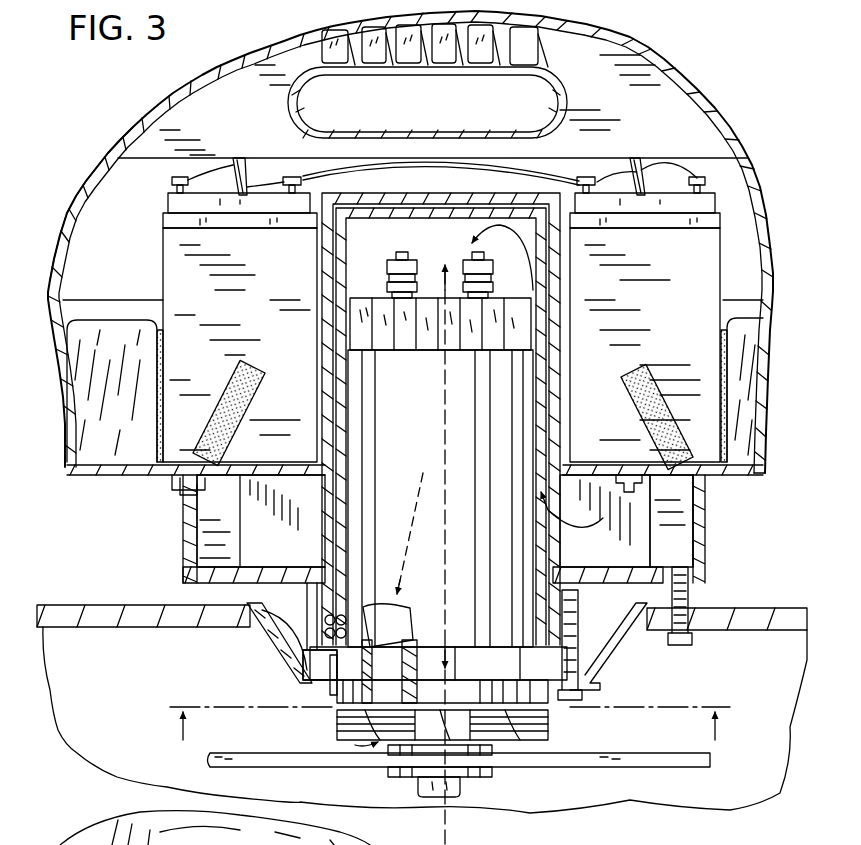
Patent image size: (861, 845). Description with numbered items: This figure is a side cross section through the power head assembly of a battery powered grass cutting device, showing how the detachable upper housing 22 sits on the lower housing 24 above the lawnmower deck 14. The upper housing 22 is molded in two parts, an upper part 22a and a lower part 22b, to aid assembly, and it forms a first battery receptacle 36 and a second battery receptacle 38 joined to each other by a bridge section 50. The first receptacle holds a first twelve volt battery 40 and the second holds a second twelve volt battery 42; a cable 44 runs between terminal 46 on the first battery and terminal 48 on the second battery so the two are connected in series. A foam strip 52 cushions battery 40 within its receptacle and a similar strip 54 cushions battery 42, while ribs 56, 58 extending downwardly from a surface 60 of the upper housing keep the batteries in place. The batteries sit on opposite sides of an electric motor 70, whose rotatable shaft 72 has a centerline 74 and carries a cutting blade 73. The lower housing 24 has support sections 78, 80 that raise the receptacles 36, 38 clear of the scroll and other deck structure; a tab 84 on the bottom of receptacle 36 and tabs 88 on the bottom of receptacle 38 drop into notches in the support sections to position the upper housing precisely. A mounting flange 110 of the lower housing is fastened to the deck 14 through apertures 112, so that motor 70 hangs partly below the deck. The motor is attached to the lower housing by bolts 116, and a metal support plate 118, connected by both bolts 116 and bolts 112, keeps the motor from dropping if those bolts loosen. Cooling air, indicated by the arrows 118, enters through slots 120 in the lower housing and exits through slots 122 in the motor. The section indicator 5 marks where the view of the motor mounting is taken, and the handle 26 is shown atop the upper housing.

The section line 5- 5 is at (450, 709).
The lawnmower deck 14 is at (760, 622).
The upper housing 22 is at (745, 128).
The upper part 22a is at (76, 205).
The lower part 22b is at (55, 380).
The lower housing 24 is at (175, 573).
The handle 26 is at (513, 14).
The first battery receptacle 36 is at (167, 475).
The second battery receptacle 38 is at (727, 440).
The first 12 volt battery 40 is at (252, 322).
The second 12 volt battery 42 is at (690, 266).
The cable 44 is at (542, 167).
The terminal 46 is at (287, 173).
The terminal 48 is at (594, 178).
The bridge section 50 is at (430, 191).
The foam strip 52 is at (205, 377).
The foam strip 54 is at (717, 398).
The rib 56 is at (233, 163).
The rib 58 is at (632, 160).
The surface 60 is at (160, 165).
The electric motor 70 is at (415, 388).
The rotatable shaft 72 is at (497, 753).
The cutting blade 73 is at (603, 766).
The centerline 74 is at (468, 544).
The support section 78 is at (182, 550).
The support section 80 is at (706, 510).
The tab 84 is at (185, 487).
The tabs 88 is at (697, 487).
The mounting flange 110 is at (694, 587).
The apertures 112 is at (657, 557).
The bolts 116 is at (587, 695).
The support plate 118 is at (217, 651).
The slots 120 is at (320, 542).
The slots 122 is at (333, 700).